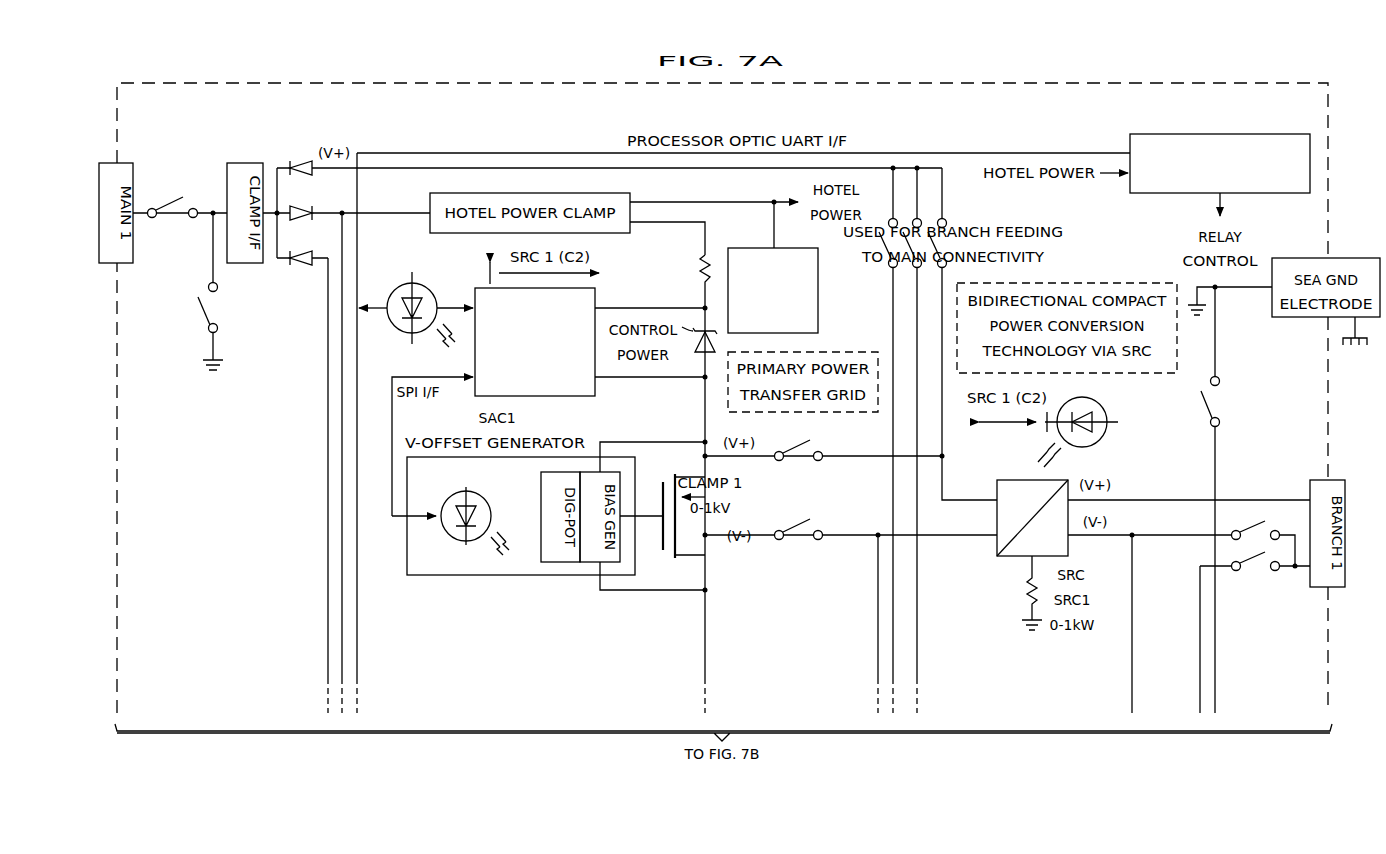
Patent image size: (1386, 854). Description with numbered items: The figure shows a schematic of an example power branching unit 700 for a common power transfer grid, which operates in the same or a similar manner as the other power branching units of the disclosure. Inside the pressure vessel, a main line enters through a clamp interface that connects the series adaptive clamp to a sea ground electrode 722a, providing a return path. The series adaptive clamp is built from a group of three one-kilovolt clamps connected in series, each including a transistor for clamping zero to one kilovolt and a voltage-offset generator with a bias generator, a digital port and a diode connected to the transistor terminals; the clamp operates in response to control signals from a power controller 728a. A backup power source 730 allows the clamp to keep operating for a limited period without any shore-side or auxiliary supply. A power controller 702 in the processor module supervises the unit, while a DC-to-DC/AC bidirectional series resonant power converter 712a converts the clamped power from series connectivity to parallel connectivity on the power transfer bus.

The power branching unit 700 is at (447, 80).
The sea ground electrode 722a is at (210, 347).
The power controller 728a is at (512, 382).
The backup power source 730 is at (820, 291).
The power controller 702 is at (1275, 195).
The DC-to-DC/AC bidirectional series resonant power converter 712a is at (1006, 560).